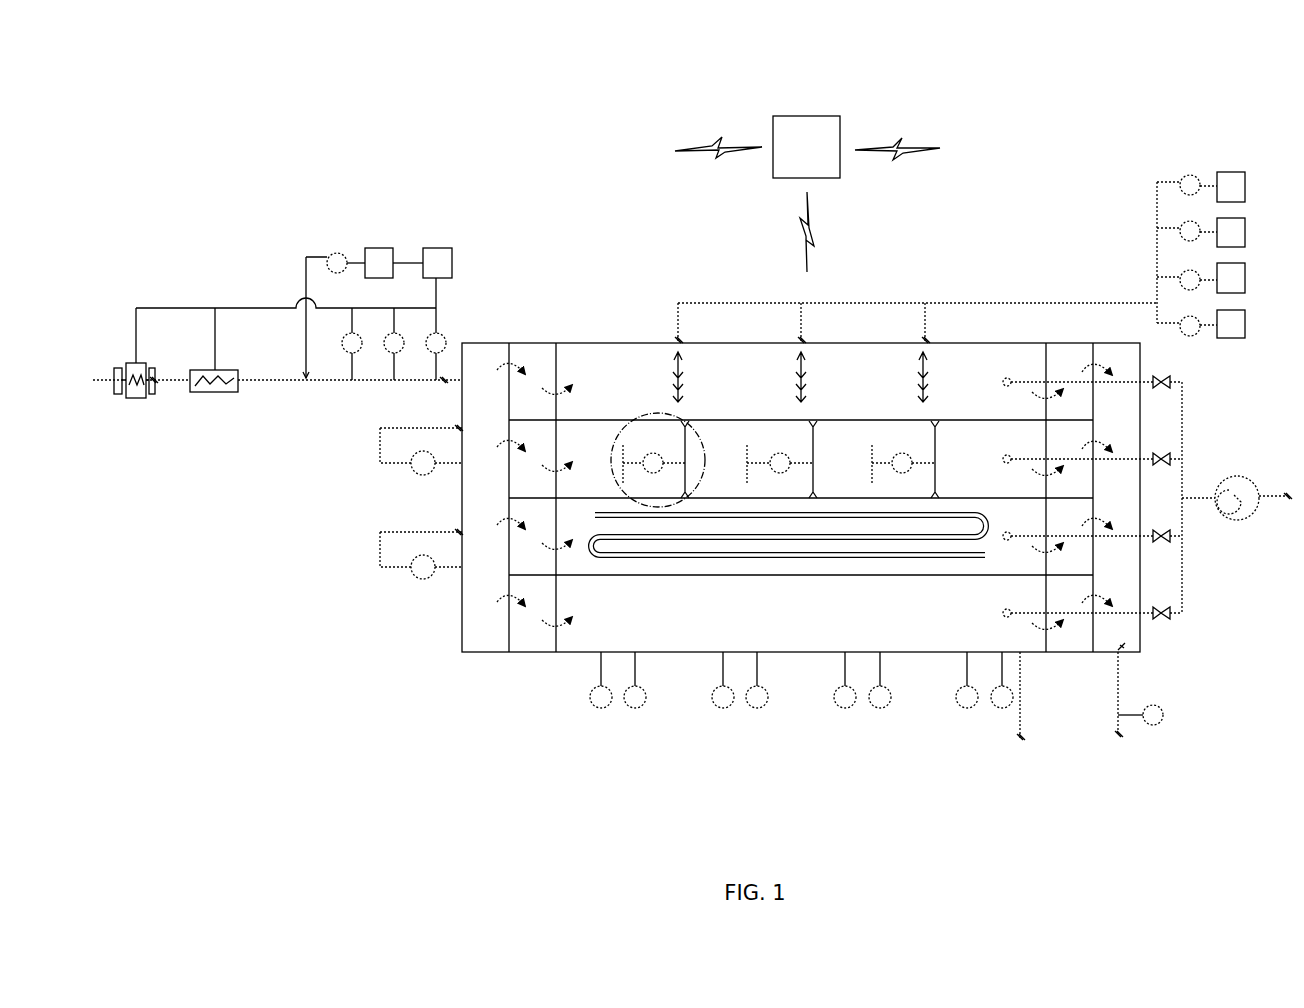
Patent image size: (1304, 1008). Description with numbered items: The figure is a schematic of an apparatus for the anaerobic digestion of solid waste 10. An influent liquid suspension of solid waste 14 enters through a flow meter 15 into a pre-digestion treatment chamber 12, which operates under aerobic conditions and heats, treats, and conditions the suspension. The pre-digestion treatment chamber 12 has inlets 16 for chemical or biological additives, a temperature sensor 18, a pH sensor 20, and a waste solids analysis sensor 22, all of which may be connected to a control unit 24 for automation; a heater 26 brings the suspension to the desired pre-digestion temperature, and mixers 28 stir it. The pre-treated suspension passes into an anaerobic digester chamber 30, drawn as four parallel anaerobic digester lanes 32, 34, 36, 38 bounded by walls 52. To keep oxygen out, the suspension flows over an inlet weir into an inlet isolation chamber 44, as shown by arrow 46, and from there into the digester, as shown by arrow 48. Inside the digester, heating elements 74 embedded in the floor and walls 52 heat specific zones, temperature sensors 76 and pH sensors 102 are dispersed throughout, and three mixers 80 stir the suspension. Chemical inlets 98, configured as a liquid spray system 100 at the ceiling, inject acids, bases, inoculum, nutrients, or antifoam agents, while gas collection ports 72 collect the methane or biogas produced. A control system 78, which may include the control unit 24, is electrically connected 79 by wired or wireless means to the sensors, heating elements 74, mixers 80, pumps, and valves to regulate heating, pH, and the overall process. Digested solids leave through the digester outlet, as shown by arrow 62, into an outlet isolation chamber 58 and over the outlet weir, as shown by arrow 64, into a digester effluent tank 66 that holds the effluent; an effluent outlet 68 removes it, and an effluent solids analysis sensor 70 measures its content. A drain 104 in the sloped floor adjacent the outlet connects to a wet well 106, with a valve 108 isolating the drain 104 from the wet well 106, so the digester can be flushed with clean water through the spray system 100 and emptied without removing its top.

The apparatus for the anaerobic digestion of solid waste 10 is at (533, 114).
The pre-digestion treatment chamber 12 is at (484, 634).
The influent liquid suspension of solid waste 14 is at (93, 380).
The flow meter 15 is at (136, 398).
The inlets 16 is at (378, 248).
The temperature sensor 18 is at (348, 352).
The pH sensor 20 is at (390, 352).
The waste solids analysis sensor 22 is at (430, 352).
The control unit 24 is at (437, 248).
The heater 26 is at (214, 392).
The mixers 28 is at (379, 442).
The anaerobic digester chamber 30 is at (590, 300).
The anaerobic digester lane 32 is at (998, 402).
The anaerobic digester lane 34 is at (998, 483).
The anaerobic digester lane 36 is at (1003, 558).
The anaerobic digester lane 38 is at (1003, 635).
The inlet isolation chamber 44 is at (527, 637).
The arrow 46 is at (497, 370).
The arrow 48 is at (547, 392).
The walls 52 is at (857, 345).
The outlet isolation chamber 58 is at (1068, 643).
The arrow 62 is at (1055, 636).
The arrow 64 is at (1085, 600).
The digester effluent tank 66 is at (1133, 650).
The effluent outlet 68 is at (1122, 723).
The effluent solids analysis sensor 70 is at (1157, 727).
The gas collection ports 72 is at (1020, 738).
The heating elements 74 is at (738, 558).
The temperature sensors 76 is at (592, 702).
The control system 78 is at (806, 147).
The electrical connection 79 is at (897, 158).
The mixers 80 is at (662, 412).
The chemical inlets 98 is at (1237, 187).
The liquid spray system 100 is at (682, 390).
The pH sensors 102 is at (632, 705).
The drain 104 is at (1009, 378).
The wet well 106 is at (1240, 475).
The valve 108 is at (1163, 622).